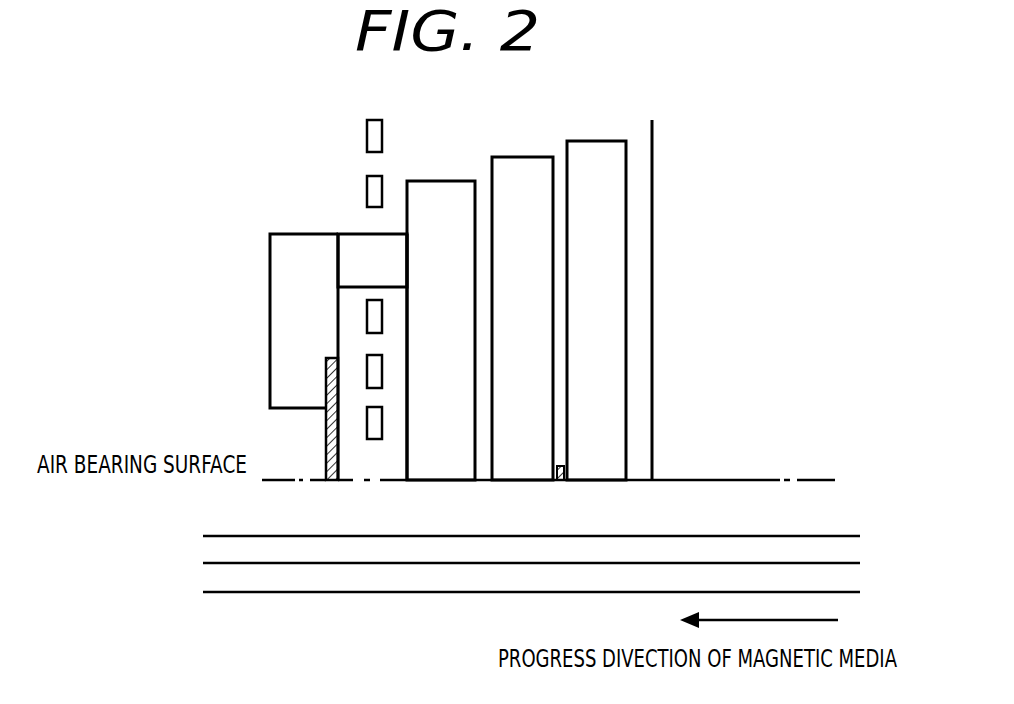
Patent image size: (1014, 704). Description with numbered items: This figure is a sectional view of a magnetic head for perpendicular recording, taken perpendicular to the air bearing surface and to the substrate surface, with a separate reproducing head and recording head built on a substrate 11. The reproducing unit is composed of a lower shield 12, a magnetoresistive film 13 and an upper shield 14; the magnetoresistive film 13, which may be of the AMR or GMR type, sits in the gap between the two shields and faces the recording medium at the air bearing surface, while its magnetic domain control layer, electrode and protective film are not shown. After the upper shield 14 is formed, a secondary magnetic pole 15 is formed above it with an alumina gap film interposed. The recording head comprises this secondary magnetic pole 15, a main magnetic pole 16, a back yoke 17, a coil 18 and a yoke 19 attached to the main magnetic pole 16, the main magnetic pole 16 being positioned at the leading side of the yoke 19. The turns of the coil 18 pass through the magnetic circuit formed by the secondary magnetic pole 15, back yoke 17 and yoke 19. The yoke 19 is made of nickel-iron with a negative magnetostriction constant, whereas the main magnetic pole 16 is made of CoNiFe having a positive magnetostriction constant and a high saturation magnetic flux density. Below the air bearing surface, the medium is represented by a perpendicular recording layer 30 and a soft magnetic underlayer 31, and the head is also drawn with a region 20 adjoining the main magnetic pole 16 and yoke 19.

The substrate 11 is at (675, 412).
The lower shield 12 is at (600, 470).
The magnetoresistive film 13 is at (561, 470).
The upper shield 14 is at (522, 470).
The secondary magnetic pole 15 is at (448, 467).
The main magnetic pole 16 is at (326, 435).
The back yoke 17 is at (377, 250).
The coil 18 is at (380, 140).
The yoke 19 is at (270, 302).
The write head yoke 20 is at (368, 460).
The perpendicular recording layer 30 is at (220, 550).
The soft magnetic underlayer 31 is at (220, 575).